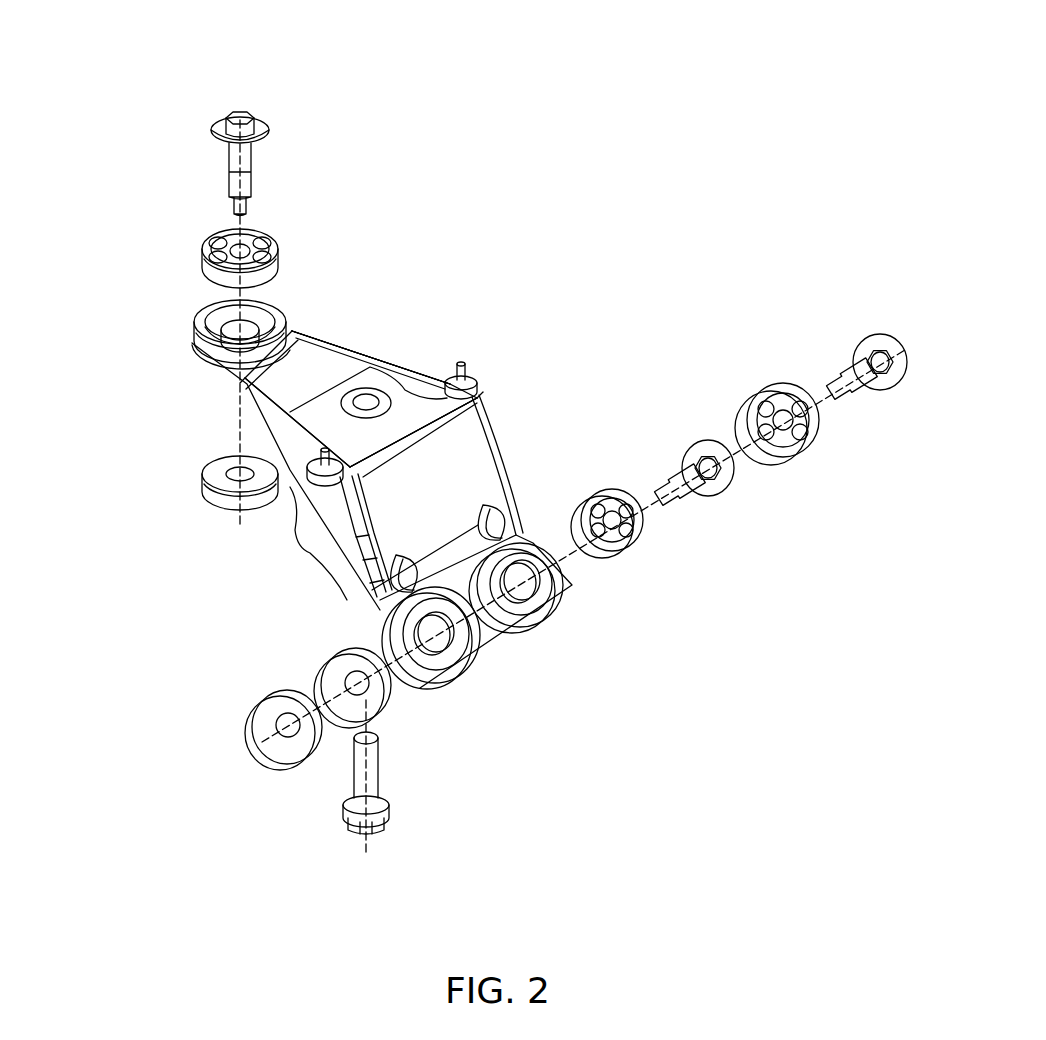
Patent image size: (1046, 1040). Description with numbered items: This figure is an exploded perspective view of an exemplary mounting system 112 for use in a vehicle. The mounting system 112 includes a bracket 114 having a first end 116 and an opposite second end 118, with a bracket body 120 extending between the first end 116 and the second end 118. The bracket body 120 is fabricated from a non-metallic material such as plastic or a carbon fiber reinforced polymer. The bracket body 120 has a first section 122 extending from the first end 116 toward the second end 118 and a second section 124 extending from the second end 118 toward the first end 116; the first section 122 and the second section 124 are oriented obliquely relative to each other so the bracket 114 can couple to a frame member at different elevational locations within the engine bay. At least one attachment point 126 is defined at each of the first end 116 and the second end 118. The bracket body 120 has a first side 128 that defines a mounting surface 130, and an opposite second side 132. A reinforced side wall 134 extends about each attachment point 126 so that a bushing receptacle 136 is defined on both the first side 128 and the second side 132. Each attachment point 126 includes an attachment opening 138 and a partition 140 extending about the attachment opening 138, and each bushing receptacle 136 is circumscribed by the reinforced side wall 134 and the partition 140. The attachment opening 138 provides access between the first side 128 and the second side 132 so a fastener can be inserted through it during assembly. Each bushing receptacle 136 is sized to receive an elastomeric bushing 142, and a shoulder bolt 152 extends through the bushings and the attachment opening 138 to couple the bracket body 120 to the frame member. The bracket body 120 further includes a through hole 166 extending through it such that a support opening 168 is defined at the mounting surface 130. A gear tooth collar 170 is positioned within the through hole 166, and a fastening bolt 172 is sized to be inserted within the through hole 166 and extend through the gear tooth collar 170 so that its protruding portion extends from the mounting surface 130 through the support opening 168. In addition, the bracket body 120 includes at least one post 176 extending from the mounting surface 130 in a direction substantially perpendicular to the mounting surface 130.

The mounting system 112 is at (147, 73).
The bracket 114 is at (507, 330).
The first end 116 is at (140, 379).
The second end 118 is at (597, 608).
The bracket body 120 is at (347, 373).
The first section 122 is at (343, 318).
The second section 124 is at (537, 449).
The attachment point 126 is at (185, 310).
The first side 128 is at (278, 387).
The mounting surface 130 is at (410, 385).
The second side 132 is at (313, 546).
The reinforced side wall 134 is at (285, 300).
The bushing receptacle 136 is at (207, 300).
The attachment opening 138 is at (205, 328).
The partition 140 is at (262, 325).
The elastomeric bushing 142 is at (262, 230).
The shoulder bolt 152 is at (258, 128).
The through hole 166 is at (377, 380).
The support opening 168 is at (477, 395).
The gear tooth collar 170 is at (312, 455).
The fastening bolt 172 is at (390, 820).
The post 176 is at (472, 377).